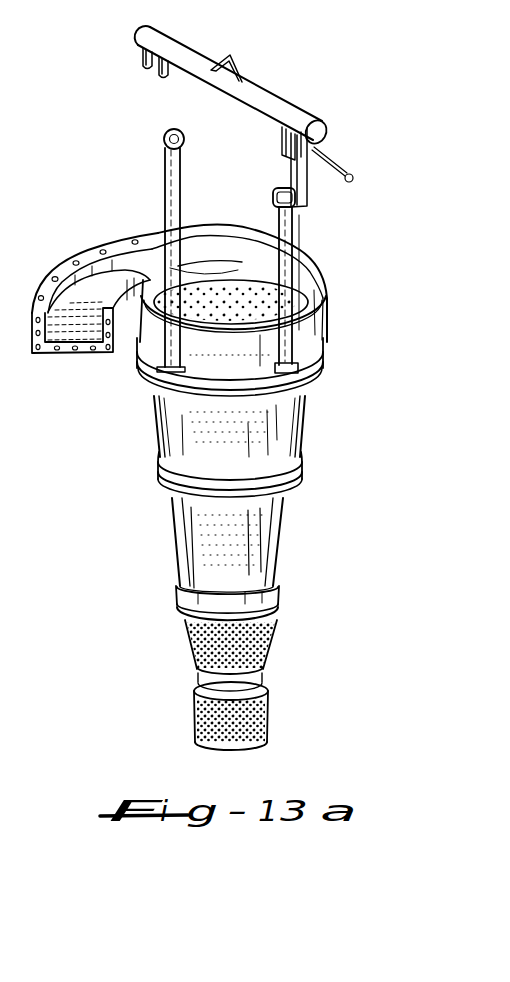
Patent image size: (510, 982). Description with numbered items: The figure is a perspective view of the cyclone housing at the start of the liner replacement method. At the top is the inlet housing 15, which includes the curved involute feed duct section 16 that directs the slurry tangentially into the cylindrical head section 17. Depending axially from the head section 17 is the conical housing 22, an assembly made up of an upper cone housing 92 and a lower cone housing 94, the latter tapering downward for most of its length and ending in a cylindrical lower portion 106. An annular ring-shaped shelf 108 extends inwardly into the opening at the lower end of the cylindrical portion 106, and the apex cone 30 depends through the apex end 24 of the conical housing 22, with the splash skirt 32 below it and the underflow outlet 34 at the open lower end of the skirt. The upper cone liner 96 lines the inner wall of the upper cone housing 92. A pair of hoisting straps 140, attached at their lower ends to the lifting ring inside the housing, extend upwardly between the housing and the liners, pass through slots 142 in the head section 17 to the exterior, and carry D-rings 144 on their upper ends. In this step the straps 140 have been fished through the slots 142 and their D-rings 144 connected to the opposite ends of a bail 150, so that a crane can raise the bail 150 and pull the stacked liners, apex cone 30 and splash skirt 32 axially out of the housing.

The inlet housing 15 is at (333, 347).
The feed duct section 16 is at (80, 338).
The cylindrical head section 17 is at (157, 372).
The conical housing 22 is at (157, 476).
The apex end 24 is at (175, 581).
The apex cone 30 is at (191, 654).
The splash skirt 32 is at (194, 713).
The underflow outlet 34 is at (228, 750).
The upper cone housing 92 is at (258, 436).
The lower cone housing 94 is at (270, 538).
The upper cone liner 96 is at (255, 286).
The cylindrical lower portion 106 is at (276, 592).
The annular ring-shaped shelf 108 is at (182, 611).
The hoisting straps 140 is at (163, 170).
The slots 142 is at (299, 370).
The D-rings 144 is at (162, 135).
The bail 150 is at (276, 94).